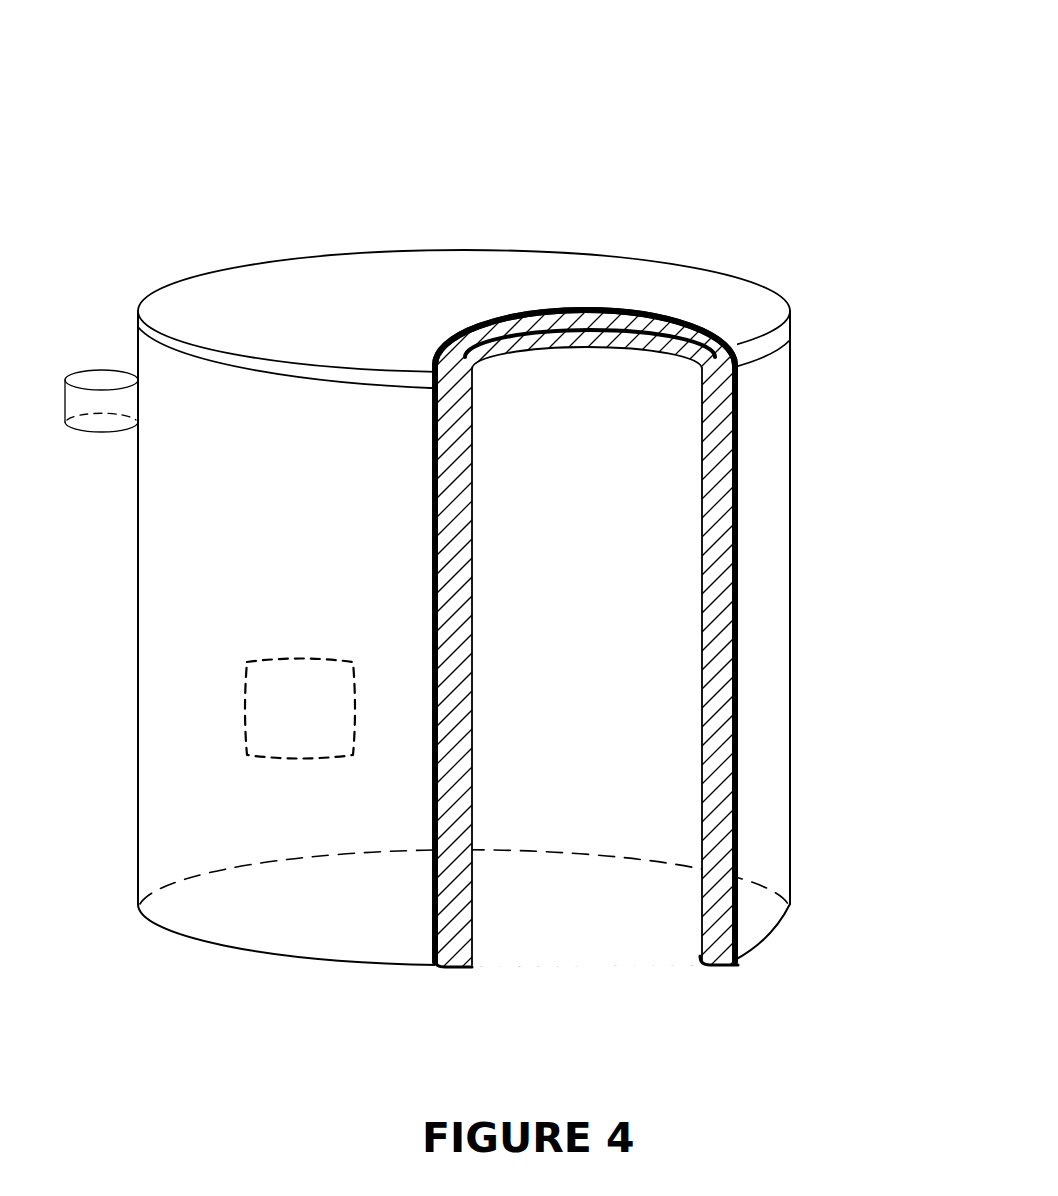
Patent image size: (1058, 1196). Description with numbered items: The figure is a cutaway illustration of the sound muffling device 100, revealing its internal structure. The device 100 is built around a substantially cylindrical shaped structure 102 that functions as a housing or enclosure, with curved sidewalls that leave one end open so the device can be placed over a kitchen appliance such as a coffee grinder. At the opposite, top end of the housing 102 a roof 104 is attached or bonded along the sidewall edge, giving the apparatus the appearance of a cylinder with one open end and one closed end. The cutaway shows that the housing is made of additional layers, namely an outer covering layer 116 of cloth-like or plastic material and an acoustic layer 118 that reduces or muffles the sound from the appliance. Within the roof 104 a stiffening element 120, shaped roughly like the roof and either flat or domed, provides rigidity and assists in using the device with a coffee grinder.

The sound muffling device 100 is at (797, 91).
The cylindrical shaped structure 102 is at (790, 636).
The roof 104 is at (230, 325).
The outer covering layer 116 is at (738, 842).
The acoustic layer 118 is at (716, 955).
The stiffening element 120 is at (630, 312).